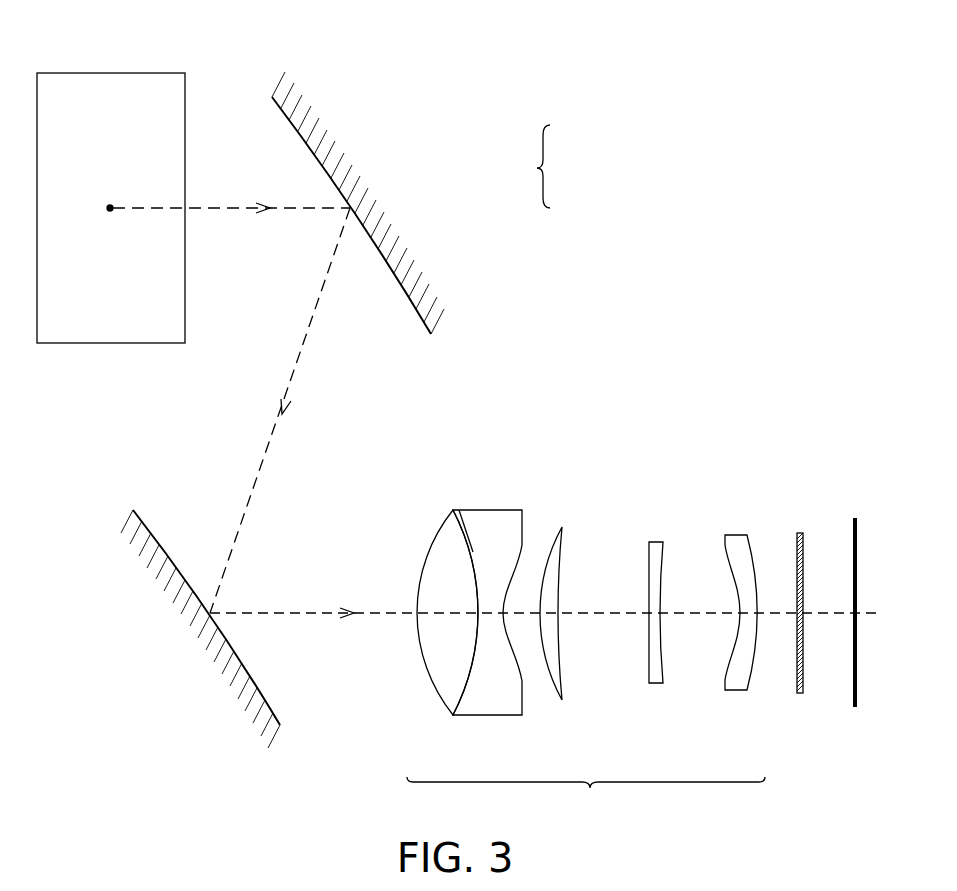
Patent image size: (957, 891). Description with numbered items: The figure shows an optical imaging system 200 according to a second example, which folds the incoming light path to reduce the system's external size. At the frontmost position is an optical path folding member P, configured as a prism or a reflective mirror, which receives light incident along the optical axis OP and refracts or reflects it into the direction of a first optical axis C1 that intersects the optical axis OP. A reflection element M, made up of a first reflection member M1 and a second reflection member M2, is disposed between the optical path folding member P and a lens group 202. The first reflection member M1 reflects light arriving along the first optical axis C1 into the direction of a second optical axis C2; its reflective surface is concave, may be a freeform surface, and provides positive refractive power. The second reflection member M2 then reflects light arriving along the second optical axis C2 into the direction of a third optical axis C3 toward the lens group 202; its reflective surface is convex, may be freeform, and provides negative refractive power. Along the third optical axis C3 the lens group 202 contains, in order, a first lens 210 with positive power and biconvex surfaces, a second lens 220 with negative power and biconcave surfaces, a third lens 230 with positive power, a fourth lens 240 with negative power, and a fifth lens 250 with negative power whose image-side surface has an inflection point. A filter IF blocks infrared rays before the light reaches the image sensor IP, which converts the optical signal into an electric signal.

The optical path folding member P is at (158, 73).
The optical axis OP is at (110, 208).
The first optical axis C1 is at (202, 207).
The first reflection member M1 is at (287, 119).
The second optical axis C2 is at (305, 343).
The second reflection member M2 is at (143, 524).
The reflection element M is at (548, 169).
The third optical axis C3 is at (277, 613).
The optical imaging system 200 is at (578, 364).
The lens group 202 is at (586, 797).
The first lens 210 is at (449, 703).
The second lens 220 is at (489, 715).
The third lens 230 is at (560, 700).
The fourth lens 240 is at (653, 683).
The fifth lens 250 is at (734, 690).
The filter IF is at (799, 693).
The image sensor IP is at (856, 707).